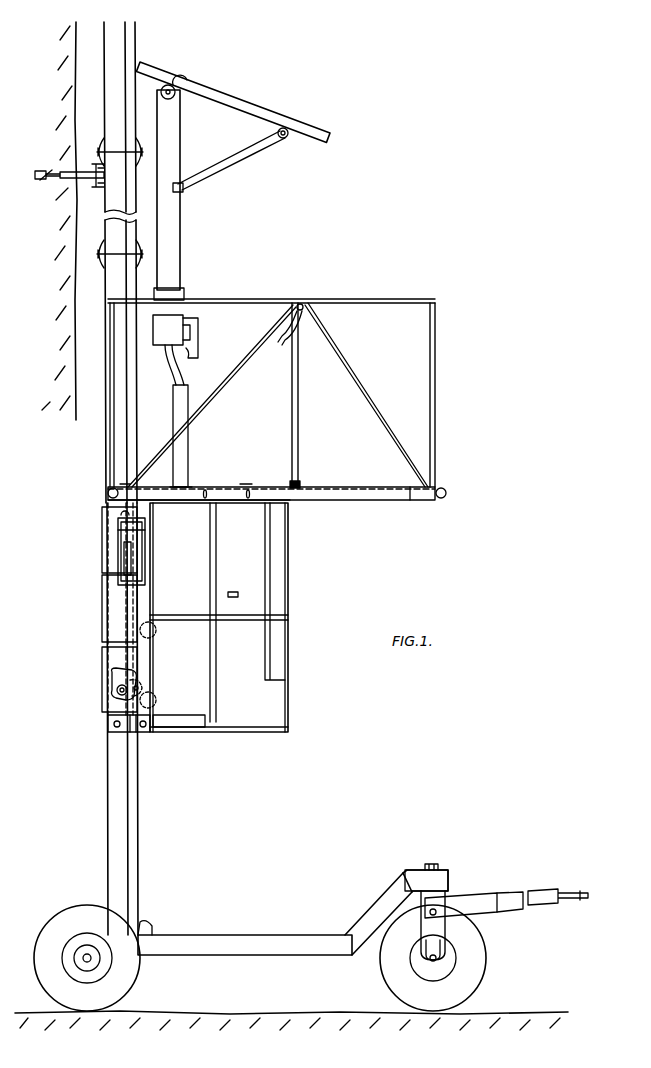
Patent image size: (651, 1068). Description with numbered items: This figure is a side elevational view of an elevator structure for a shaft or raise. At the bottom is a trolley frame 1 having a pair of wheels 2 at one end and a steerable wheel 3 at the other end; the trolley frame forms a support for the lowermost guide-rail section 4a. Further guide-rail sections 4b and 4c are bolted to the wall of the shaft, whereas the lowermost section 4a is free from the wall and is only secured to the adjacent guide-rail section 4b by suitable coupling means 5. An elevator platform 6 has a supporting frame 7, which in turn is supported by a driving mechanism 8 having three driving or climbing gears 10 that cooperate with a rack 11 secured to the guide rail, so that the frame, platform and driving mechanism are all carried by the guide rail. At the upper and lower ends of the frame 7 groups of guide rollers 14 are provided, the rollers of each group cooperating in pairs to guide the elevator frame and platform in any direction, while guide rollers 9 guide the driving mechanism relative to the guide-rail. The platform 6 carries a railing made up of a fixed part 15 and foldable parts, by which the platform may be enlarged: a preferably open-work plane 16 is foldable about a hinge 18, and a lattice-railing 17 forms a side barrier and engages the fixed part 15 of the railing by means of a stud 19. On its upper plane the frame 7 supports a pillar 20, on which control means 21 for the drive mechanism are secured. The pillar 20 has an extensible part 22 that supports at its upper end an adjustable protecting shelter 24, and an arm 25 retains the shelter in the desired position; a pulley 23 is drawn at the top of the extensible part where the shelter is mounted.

The trolley frame 1 is at (220, 935).
The pair of wheels 2 is at (138, 964).
The steerable wheel 3 is at (485, 971).
The guide-rail section 4a is at (101, 290).
The guide-rail section 4b is at (101, 210).
The guide-rail section 4c is at (101, 80).
The coupling means 5 is at (138, 262).
The elevator platform 6 is at (219, 482).
The supporting frame 7 is at (147, 580).
The driving mechanism 8 is at (99, 558).
The guide rollers 9 is at (155, 628).
The driving gears 10 is at (118, 693).
The rack 11 is at (138, 689).
The guide rollers 14 is at (107, 731).
The fixed part of railing 15 is at (232, 295).
The open-work plane 16 is at (347, 486).
The lattice-railing 17 is at (434, 380).
The hinge 18 is at (296, 483).
The stud 19 is at (301, 303).
The pillar 20 is at (185, 367).
The control means 21 is at (178, 322).
The extensible part 22 is at (173, 225).
The pulley 23 is at (168, 86).
The protecting shelter 24 is at (233, 97).
The arm 25 is at (207, 174).